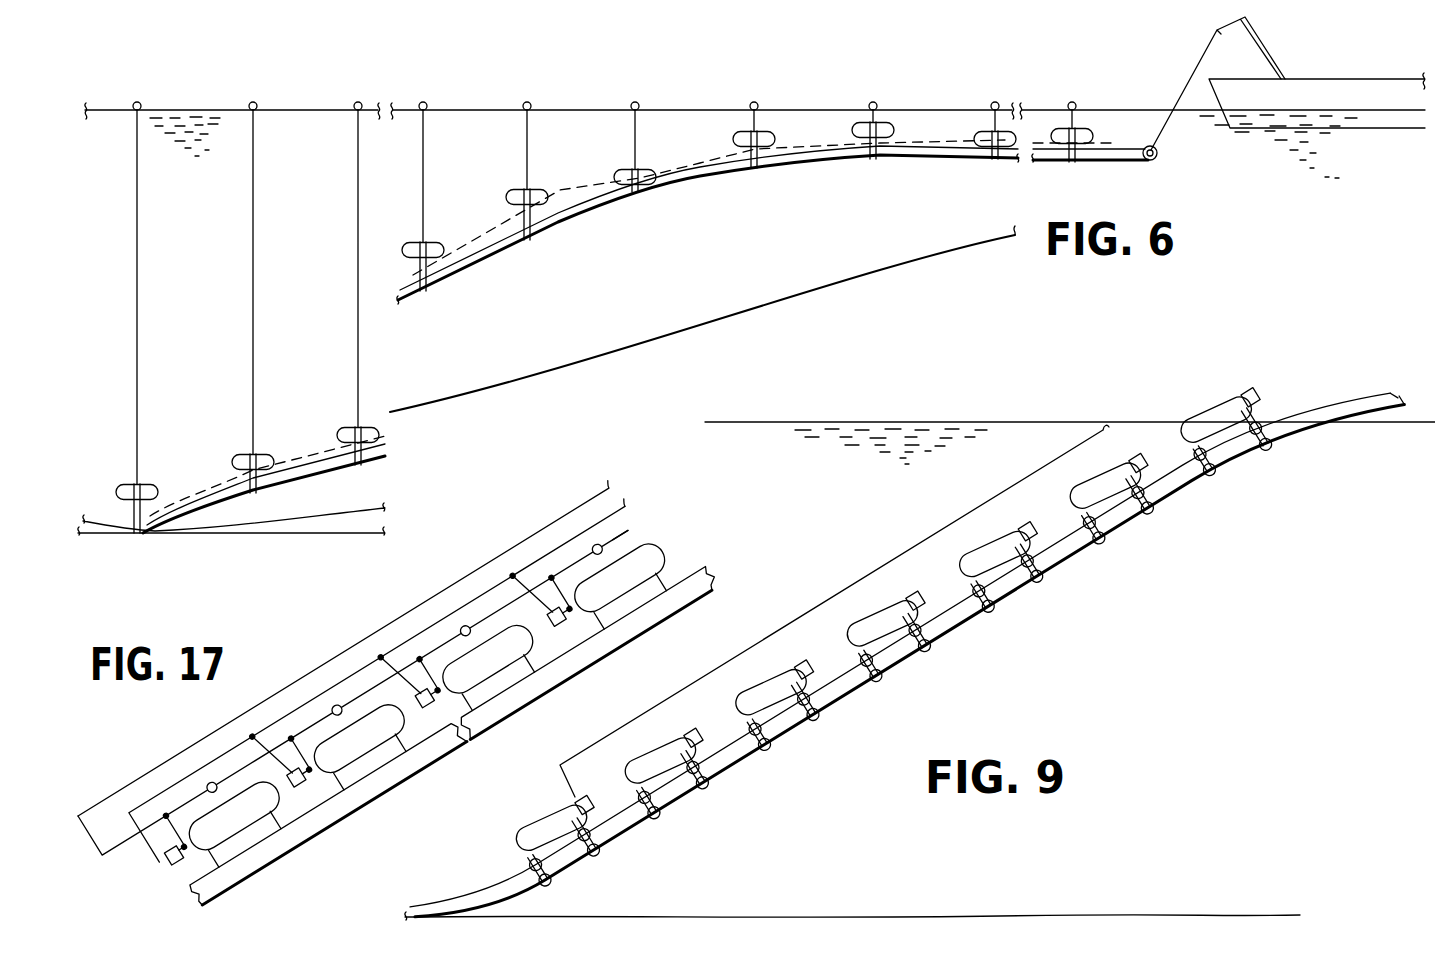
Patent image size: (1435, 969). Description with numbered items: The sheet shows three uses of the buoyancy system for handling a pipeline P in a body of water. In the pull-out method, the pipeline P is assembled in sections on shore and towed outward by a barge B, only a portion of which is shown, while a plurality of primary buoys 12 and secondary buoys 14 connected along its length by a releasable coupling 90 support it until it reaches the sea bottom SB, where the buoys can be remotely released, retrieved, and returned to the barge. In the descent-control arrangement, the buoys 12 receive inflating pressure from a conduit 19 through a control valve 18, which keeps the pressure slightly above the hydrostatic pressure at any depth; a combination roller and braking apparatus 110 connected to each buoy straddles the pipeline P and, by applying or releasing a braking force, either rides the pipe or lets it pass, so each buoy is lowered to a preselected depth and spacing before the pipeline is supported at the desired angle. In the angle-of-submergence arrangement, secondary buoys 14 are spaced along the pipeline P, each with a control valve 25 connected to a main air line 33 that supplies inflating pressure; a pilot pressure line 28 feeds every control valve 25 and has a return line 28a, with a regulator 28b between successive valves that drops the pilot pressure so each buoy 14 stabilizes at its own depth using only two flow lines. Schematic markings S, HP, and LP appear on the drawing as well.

In FIG. 6, the primary buoy 12 is at (882, 129).
In FIG. 9, the primary buoy 12 is at (1213, 408).
In FIG. 6, the secondary buoy 14 is at (760, 132).
In FIG. 17, the secondary buoy 14 is at (250, 833).
In FIG. 9, the control valve 18 is at (1258, 400).
In FIG. 6, the conduit 19 is at (684, 168).
In FIG. 9, the conduit 19 is at (945, 528).
In FIG. 17, the control valve 25 is at (172, 864).
In FIG. 6, the pilot pressure line 28 is at (570, 187).
In FIG. 17, the pilot pressure line 28 is at (216, 731).
In FIG. 17, the return line 28a is at (630, 505).
In FIG. 17, the regulator 28b is at (338, 707).
In FIG. 17, the main air line 33 is at (173, 783).
In FIG. 6, the releasable coupling 90 is at (866, 152).
In FIG. 9, the combination roller and braking apparatus 110 is at (886, 690).
In FIG. 6, the pipeline P is at (722, 176).
In FIG. 9, the pipeline P is at (1085, 548).
In FIG. 17, the pipeline P is at (622, 650).
In FIG. 6, the water surface S is at (487, 108).
In FIG. 9, the water surface S is at (1003, 420).
In FIG. 6, the sea bottom SB is at (116, 535).
In FIG. 9, the sea bottom SB is at (800, 915).
In FIG. 6, the barge B is at (1278, 97).
In FIG. 17, the high pressure hose HP is at (353, 687).
In FIG. 17, the low pressure hose LP is at (630, 530).